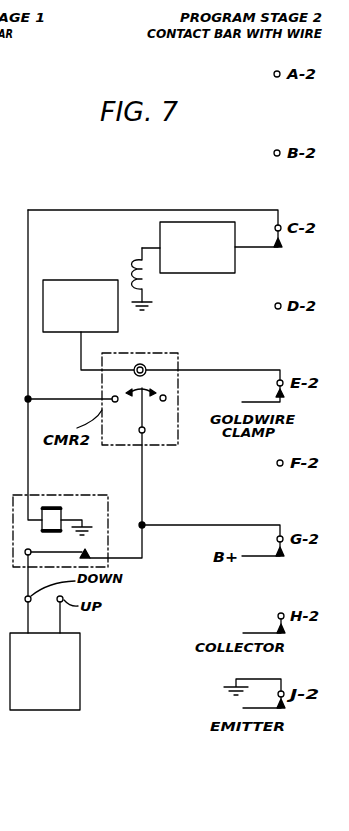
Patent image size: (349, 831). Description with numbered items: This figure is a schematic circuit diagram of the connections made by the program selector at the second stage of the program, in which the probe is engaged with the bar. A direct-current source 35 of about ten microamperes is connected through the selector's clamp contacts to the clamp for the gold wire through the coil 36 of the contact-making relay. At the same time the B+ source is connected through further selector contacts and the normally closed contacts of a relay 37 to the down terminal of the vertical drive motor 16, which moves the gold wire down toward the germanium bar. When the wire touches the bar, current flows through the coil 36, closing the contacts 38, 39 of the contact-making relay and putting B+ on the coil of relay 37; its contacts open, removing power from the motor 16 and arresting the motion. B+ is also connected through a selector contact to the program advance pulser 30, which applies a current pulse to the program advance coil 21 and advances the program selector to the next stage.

The vertical drive motor 16 is at (80, 658).
The program advance coil 21 is at (138, 258).
The program advance pulser 30 is at (198, 273).
The direct-current source 35 is at (78, 281).
The coil of CMR2 36 is at (141, 363).
The relay 37 is at (70, 495).
The contact of CMR2 38 is at (138, 398).
The contact of CMR2 39 is at (112, 396).